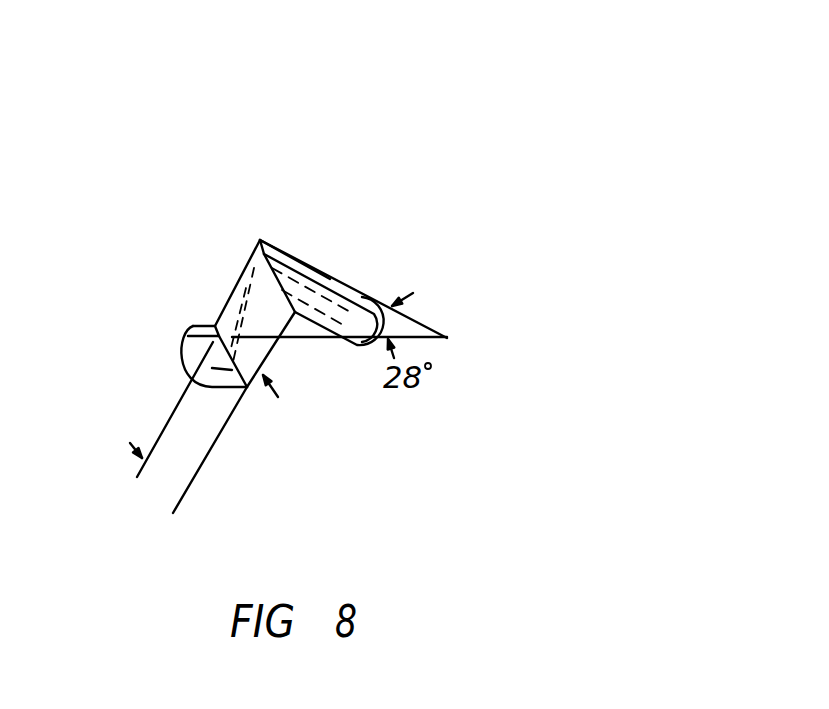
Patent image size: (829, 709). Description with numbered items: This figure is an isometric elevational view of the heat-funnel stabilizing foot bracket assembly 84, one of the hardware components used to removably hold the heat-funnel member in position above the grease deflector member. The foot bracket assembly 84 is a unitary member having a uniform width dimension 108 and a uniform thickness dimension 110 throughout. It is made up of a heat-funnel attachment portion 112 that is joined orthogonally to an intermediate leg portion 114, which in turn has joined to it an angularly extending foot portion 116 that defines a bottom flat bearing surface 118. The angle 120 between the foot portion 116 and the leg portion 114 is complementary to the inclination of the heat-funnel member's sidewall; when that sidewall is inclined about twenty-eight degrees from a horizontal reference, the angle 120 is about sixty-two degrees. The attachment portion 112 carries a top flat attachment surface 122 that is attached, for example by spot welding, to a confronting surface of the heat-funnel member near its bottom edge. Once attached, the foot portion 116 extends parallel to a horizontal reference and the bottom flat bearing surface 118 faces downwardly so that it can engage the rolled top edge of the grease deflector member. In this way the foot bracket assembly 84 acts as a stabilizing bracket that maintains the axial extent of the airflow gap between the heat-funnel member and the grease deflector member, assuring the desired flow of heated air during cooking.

The heat-funnel stabilizing foot bracket assembly 84 is at (430, 208).
The uniform width dimension 108 is at (174, 514).
The uniform thickness dimension 110 is at (338, 266).
The heat-funnel attachment portion 112 is at (353, 290).
The intermediate leg portion 114 is at (292, 333).
The foot portion 116 is at (192, 327).
The bottom flat bearing surface 118 is at (198, 355).
The angle 120 is at (227, 310).
The top flat attachment surface 122 is at (282, 250).